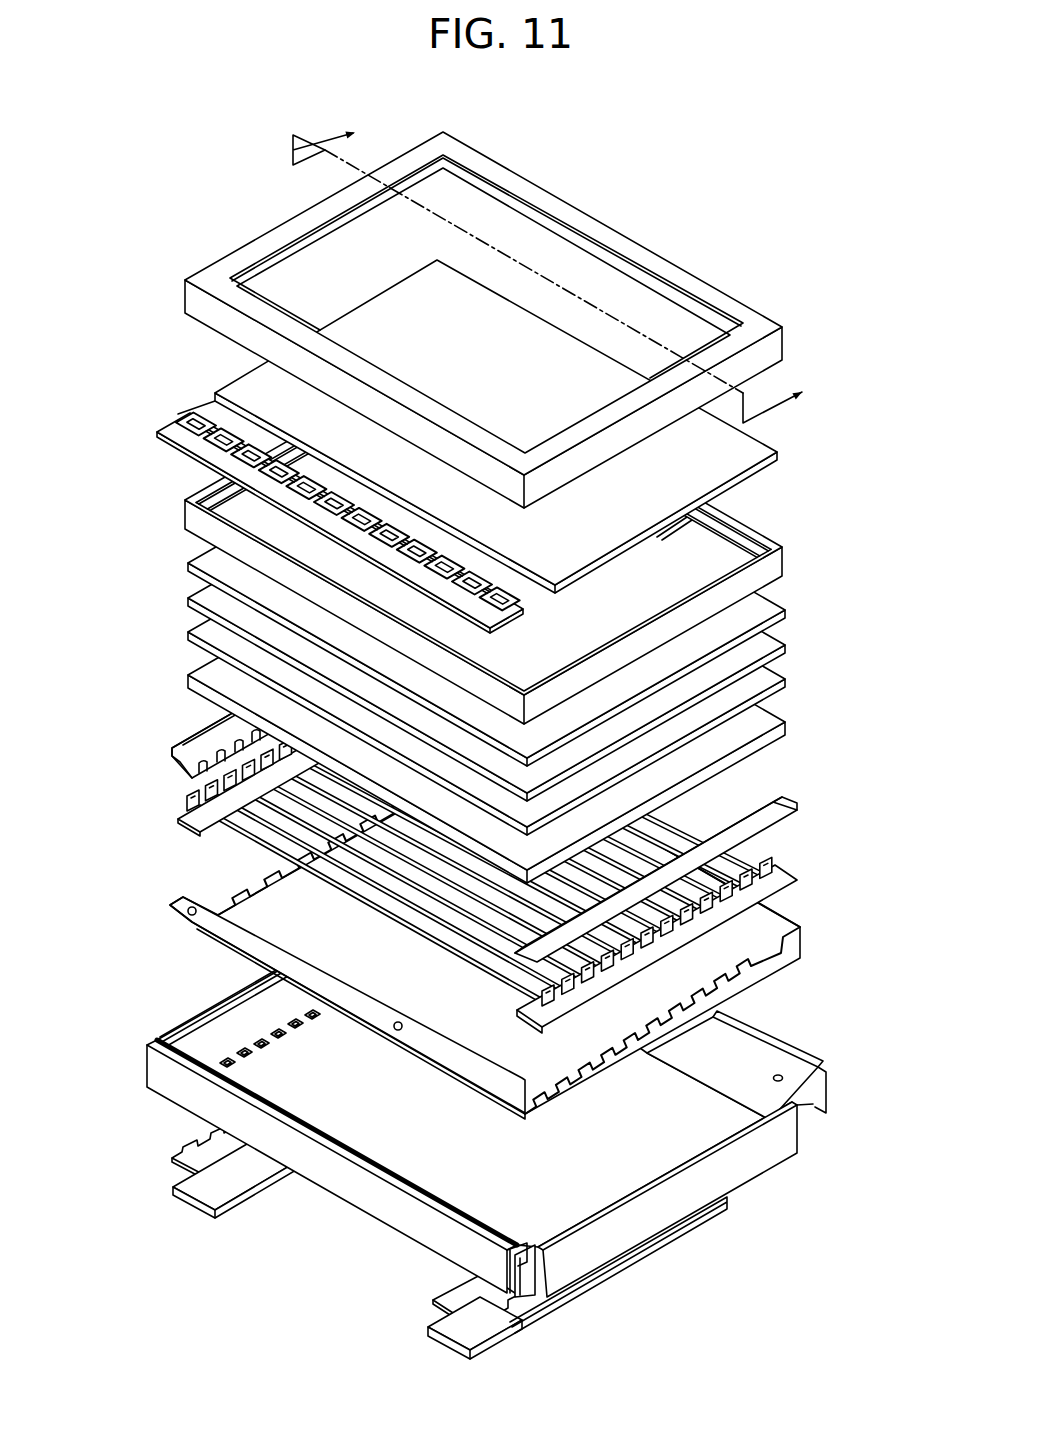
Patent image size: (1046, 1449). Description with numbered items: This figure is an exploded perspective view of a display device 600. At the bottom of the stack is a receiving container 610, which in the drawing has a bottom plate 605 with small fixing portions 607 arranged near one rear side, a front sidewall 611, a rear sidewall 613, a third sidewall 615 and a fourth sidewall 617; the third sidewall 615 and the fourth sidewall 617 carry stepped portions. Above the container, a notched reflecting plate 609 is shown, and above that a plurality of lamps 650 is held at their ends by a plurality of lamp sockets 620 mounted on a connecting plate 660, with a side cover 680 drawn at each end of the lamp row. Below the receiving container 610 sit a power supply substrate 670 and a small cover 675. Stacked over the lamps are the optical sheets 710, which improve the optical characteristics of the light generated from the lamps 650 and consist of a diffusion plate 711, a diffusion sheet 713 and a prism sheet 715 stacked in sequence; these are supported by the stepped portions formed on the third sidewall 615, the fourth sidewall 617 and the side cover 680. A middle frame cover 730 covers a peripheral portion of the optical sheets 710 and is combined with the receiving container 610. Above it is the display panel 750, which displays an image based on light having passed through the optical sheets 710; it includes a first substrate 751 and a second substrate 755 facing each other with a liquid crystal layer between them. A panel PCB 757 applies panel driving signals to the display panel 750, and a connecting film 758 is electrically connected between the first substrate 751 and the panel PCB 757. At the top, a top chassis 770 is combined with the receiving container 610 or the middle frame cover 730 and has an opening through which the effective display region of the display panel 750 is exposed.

The display device 600 is at (552, 92).
The bottom plate of bottom chassis 605 is at (693, 1143).
The fixing portions 607 is at (222, 1058).
The reflecting plate 609 is at (783, 947).
The receiving container 610 is at (519, 1111).
The front side wall 611 is at (790, 1132).
The rear side wall 613 is at (232, 1002).
The third sidewall 615 is at (437, 1240).
The fourth sidewall 617 is at (785, 1053).
The lamp sockets 620 is at (768, 870).
The lamps 650 is at (703, 824).
The connecting plate 660 is at (778, 893).
The power supply substrate 670 is at (180, 1154).
The inverter cover 675 is at (203, 1213).
The side cover 680 is at (176, 746).
The optical sheets 710 is at (547, 649).
The diffusion plate 711 is at (785, 722).
The diffusion sheet 713 is at (785, 675).
The prism sheet 715 is at (850, 745).
The middle frame cover 730 is at (782, 524).
The display panel 750 is at (418, 446).
The first substrate 751 is at (210, 407).
The second substrate 755 is at (243, 387).
The panel PCB 757 is at (190, 443).
The connecting film 758 is at (187, 419).
The top chassis 770 is at (778, 292).